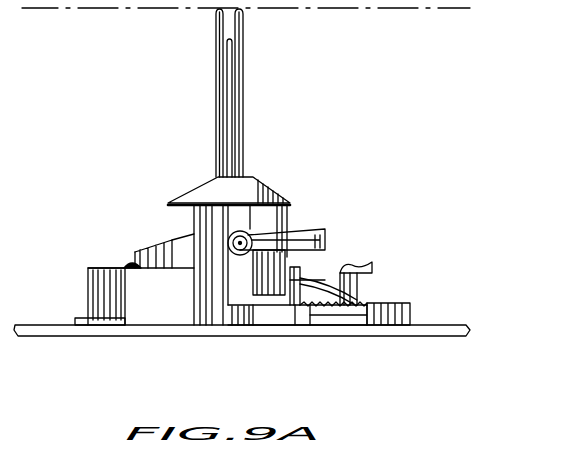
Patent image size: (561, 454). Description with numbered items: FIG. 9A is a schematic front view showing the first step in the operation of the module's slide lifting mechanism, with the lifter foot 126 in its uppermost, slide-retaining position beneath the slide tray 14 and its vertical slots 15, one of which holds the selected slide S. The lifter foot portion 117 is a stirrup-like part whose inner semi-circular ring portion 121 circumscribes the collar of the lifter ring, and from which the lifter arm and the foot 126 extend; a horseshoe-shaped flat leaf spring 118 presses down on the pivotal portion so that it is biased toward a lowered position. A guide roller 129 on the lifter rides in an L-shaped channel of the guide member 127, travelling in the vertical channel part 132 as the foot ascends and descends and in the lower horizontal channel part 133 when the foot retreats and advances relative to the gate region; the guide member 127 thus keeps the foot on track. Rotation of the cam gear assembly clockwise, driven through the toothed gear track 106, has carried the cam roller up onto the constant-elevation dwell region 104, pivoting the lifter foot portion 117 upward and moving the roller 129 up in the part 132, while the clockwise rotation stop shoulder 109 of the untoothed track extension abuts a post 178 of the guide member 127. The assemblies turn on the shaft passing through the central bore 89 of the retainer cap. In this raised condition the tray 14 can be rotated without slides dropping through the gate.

The slide tray 14 is at (388, 8).
The vertical slots 15 is at (223, 30).
The slide S is at (230, 108).
The lifter foot 126 is at (250, 186).
The guide roller 129 is at (250, 222).
The lifter foot portion 117 is at (324, 231).
The inner semi-circular ring portion 121 is at (305, 278).
The leaf spring 118 is at (372, 267).
The gear track 106 is at (390, 304).
The dwell region 104 is at (103, 268).
The central bore 89 is at (143, 252).
The post 178 is at (194, 278).
The vertical channel part 132 is at (242, 280).
The clockwise rotation stop shoulder 109 is at (236, 325).
The guide member 127 is at (263, 297).
The lower horizontal channel part 133 is at (291, 326).